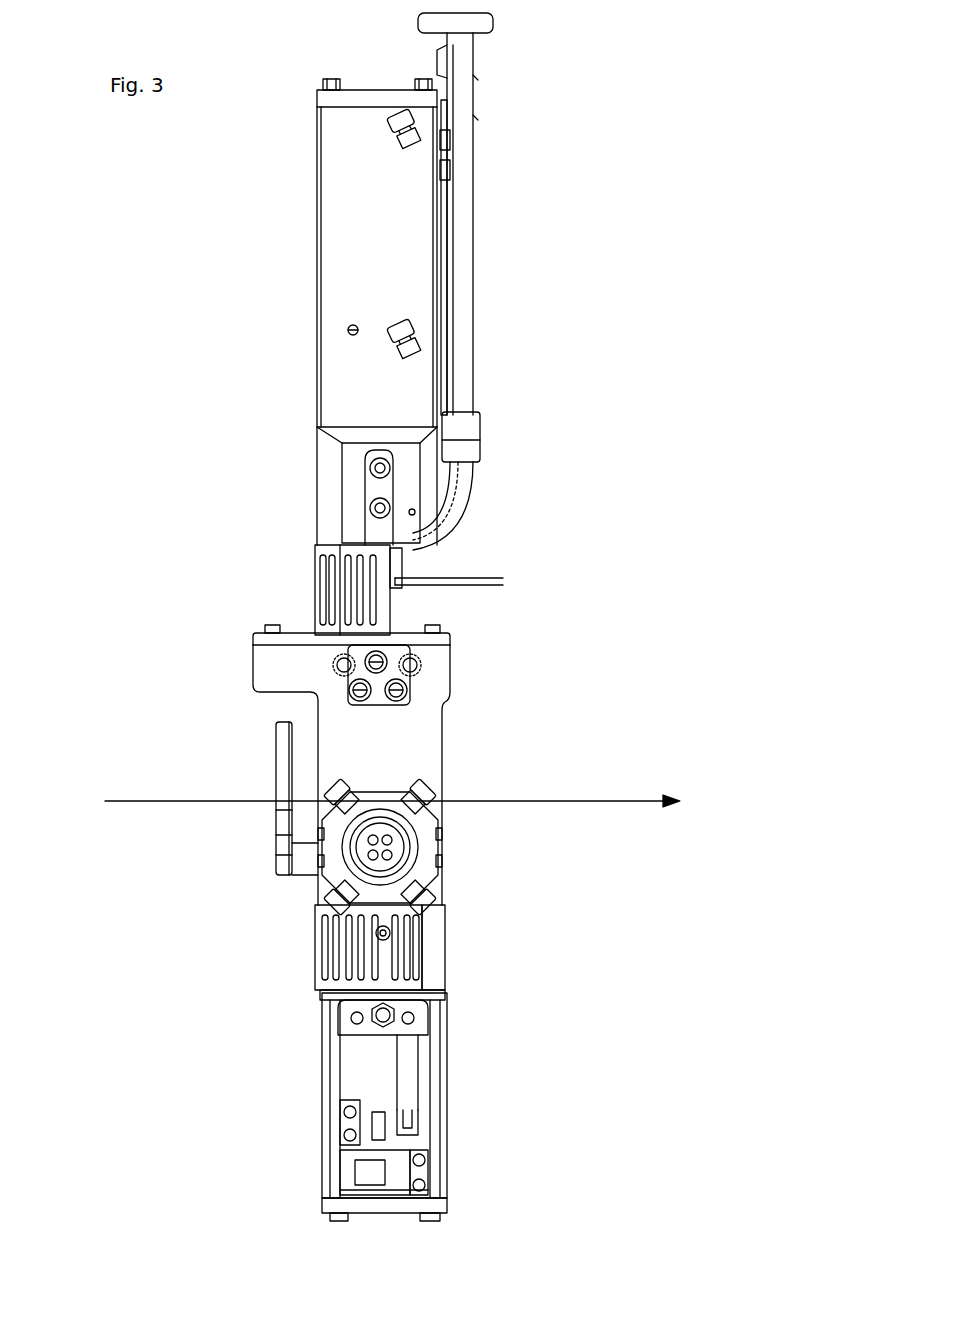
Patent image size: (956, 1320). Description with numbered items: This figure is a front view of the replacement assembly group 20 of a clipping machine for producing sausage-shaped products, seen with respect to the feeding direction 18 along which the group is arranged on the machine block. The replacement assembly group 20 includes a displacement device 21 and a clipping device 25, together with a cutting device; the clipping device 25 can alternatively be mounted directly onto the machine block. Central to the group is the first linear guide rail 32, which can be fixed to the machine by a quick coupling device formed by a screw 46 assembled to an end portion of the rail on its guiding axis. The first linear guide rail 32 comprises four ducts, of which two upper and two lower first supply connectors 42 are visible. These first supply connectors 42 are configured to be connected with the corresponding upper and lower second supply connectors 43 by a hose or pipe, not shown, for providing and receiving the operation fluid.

The feeding direction 18 is at (578, 797).
The replacement assembly group 20 is at (172, 370).
The displacement device 21 is at (240, 534).
The clipping device 25 is at (492, 473).
The first linear guide rail 32 is at (350, 858).
The first supply connectors 42 is at (410, 785).
The second supply connectors 43 is at (422, 347).
The screw 46 is at (393, 852).